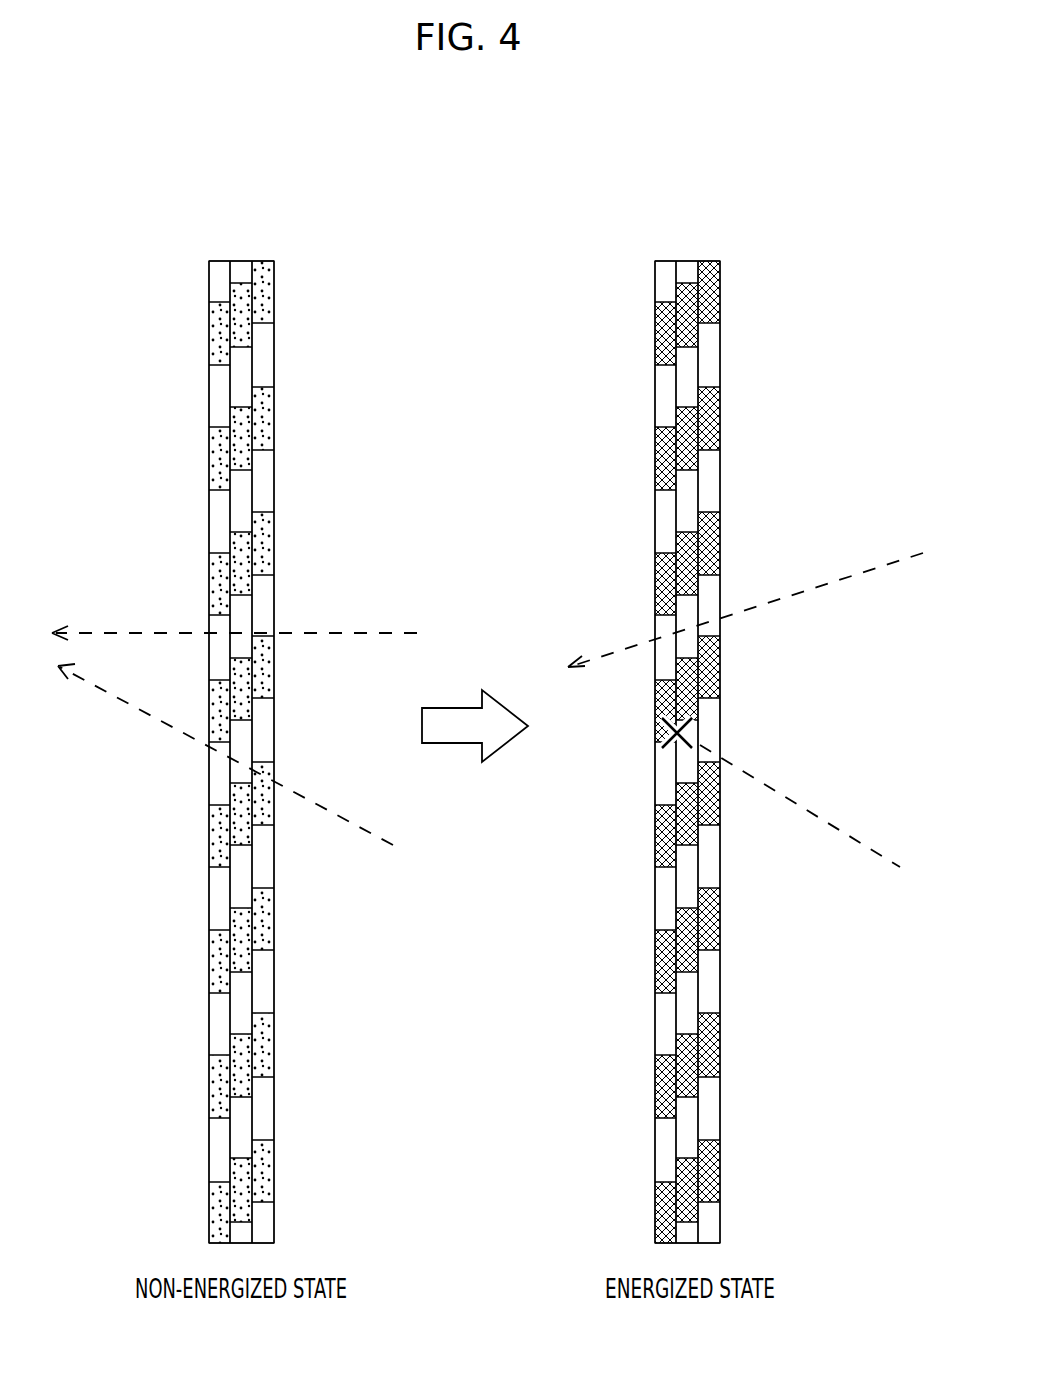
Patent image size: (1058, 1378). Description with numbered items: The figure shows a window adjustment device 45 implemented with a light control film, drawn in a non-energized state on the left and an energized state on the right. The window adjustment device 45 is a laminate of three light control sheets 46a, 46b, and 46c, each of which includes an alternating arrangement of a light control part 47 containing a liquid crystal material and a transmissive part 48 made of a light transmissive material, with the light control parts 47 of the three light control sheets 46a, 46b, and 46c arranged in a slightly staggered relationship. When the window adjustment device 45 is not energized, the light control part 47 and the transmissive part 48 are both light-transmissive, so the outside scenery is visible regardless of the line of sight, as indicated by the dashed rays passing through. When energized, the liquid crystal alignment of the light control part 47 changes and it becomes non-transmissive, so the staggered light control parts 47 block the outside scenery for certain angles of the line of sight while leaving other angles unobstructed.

The window adjustment device 45 is at (274, 142).
The light control sheet 46a is at (218, 260).
The light control sheet 46b is at (238, 260).
The light control sheet 46c is at (262, 260).
The light control part 47 is at (220, 333).
The transmissive part 48 is at (220, 398).